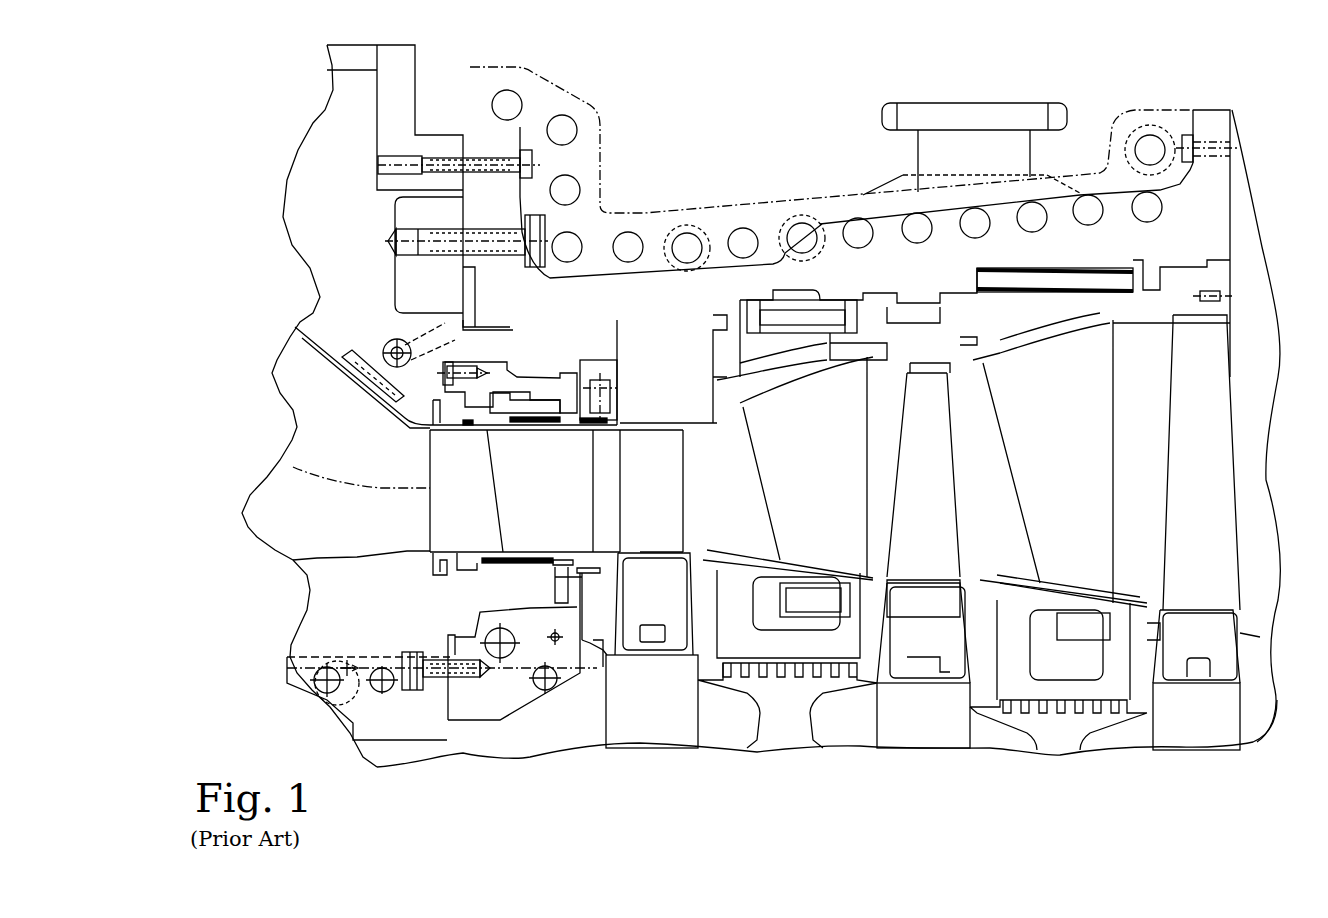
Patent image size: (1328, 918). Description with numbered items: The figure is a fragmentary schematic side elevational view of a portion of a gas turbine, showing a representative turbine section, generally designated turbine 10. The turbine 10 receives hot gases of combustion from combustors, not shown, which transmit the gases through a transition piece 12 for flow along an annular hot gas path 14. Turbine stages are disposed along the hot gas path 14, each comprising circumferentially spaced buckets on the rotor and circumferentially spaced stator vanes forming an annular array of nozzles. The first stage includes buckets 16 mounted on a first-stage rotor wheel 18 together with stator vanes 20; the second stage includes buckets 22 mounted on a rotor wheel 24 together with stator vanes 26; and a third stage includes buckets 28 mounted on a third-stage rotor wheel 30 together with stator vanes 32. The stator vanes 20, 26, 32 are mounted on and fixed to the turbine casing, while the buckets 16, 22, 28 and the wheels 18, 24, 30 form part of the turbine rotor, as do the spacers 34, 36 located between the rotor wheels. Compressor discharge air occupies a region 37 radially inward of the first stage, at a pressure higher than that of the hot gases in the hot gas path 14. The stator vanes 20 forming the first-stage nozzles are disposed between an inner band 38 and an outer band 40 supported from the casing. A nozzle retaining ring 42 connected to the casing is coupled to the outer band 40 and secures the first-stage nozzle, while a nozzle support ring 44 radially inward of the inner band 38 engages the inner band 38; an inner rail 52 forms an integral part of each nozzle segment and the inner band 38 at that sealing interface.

The turbine 10 is at (684, 147).
The transition piece 12 is at (307, 410).
The hot gas path 14 is at (717, 423).
The buckets 16 is at (677, 457).
The first-stage rotor wheel 18 is at (633, 727).
The stator vanes 20 is at (556, 491).
The buckets 22 is at (947, 467).
The rotor wheel 24 is at (927, 733).
The stator vanes 26 is at (840, 424).
The buckets 28 is at (1227, 463).
The third-stage rotor wheel 30 is at (1200, 743).
The stator vanes 32 is at (1102, 433).
The spacer 34 is at (790, 733).
The spacer 36 is at (1063, 743).
The region 37 is at (442, 668).
The inner band 38 is at (530, 552).
The outer band 40 is at (553, 427).
The nozzle retaining ring 42 is at (496, 372).
The nozzle support ring 44 is at (583, 598).
The inner rail 52 is at (560, 565).